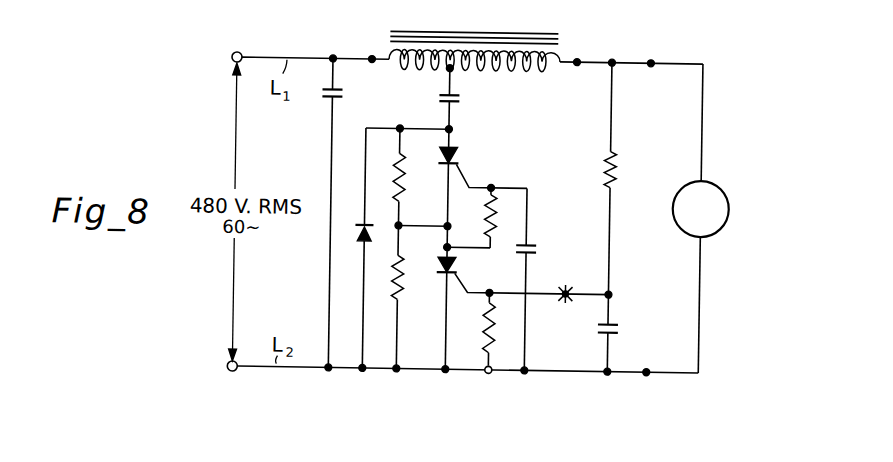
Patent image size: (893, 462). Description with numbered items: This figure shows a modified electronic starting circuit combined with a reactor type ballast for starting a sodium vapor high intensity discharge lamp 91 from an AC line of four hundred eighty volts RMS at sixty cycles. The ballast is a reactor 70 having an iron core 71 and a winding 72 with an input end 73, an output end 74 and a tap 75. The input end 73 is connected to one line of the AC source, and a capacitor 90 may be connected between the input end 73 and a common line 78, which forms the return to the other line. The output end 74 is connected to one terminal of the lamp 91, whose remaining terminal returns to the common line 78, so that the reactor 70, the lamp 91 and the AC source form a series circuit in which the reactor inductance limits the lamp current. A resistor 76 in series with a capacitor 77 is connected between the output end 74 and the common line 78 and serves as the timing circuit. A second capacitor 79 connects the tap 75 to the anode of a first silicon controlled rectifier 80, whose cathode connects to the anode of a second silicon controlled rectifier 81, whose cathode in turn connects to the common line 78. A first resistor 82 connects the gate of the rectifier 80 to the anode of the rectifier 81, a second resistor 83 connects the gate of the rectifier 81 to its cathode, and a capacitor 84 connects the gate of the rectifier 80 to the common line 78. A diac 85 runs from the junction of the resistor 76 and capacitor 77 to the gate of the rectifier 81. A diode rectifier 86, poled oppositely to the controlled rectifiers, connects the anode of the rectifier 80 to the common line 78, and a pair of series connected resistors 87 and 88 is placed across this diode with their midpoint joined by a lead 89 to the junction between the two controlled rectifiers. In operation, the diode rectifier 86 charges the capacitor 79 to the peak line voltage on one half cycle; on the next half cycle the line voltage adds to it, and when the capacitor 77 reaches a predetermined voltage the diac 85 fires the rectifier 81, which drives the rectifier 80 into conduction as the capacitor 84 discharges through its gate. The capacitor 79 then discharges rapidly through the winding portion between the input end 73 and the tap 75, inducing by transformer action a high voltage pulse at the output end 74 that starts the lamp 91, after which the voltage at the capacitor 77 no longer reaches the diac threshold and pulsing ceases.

The reactor 70 is at (470, 58).
The iron core 71 is at (390, 29).
The winding 72 is at (496, 63).
The input end 73 is at (372, 59).
The output end 74 is at (577, 60).
The tap 75 is at (444, 67).
The resistor 76 is at (622, 166).
The capacitor 77 is at (621, 311).
The common line 78 is at (547, 367).
The second capacitor 79 is at (459, 92).
The first silicon controlled rectifier 80 is at (458, 154).
The second silicon controlled rectifier 81 is at (458, 263).
The first resistor 82 is at (471, 218).
The second resistor 83 is at (484, 301).
The capacitor 84 is at (538, 247).
The diac 85 is at (567, 297).
The diode rectifier 86 is at (375, 231).
The resistor 87 is at (407, 176).
The resistor 88 is at (422, 288).
The lead 89 is at (434, 225).
The capacitor 90 is at (331, 94).
The lamp 91 is at (722, 182).